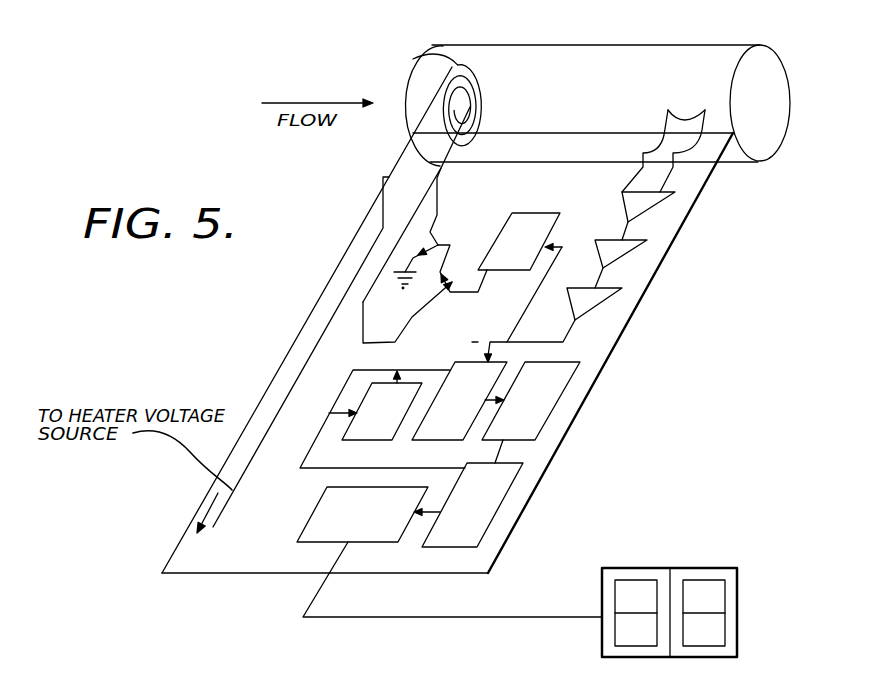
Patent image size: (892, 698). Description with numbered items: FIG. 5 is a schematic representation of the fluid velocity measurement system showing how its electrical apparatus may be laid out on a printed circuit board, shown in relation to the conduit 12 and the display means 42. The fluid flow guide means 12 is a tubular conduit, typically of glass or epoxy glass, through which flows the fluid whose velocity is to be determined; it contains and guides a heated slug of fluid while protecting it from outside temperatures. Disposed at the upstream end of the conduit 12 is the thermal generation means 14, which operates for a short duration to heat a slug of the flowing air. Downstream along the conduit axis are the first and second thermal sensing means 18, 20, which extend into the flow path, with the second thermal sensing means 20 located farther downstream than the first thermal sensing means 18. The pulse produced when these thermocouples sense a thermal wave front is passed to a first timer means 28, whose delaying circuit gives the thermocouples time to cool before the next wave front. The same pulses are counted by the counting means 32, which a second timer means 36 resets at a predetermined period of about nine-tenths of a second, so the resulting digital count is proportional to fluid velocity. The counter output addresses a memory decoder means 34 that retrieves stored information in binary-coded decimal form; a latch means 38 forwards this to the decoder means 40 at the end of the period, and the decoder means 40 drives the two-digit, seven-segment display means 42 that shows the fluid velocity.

The fluid flow guide means 12 is at (567, 48).
The thermal generation means 14 is at (413, 59).
The first thermal sensing means 18 is at (668, 108).
The second thermal sensing means 20 is at (705, 110).
The first timer means 28 is at (543, 212).
The counting means 32 is at (414, 441).
The memory decoder means 34 is at (562, 362).
The second timer means 36 is at (344, 441).
The latch means 38 is at (447, 538).
The decoder means 40 is at (368, 537).
The display means 42 is at (700, 592).